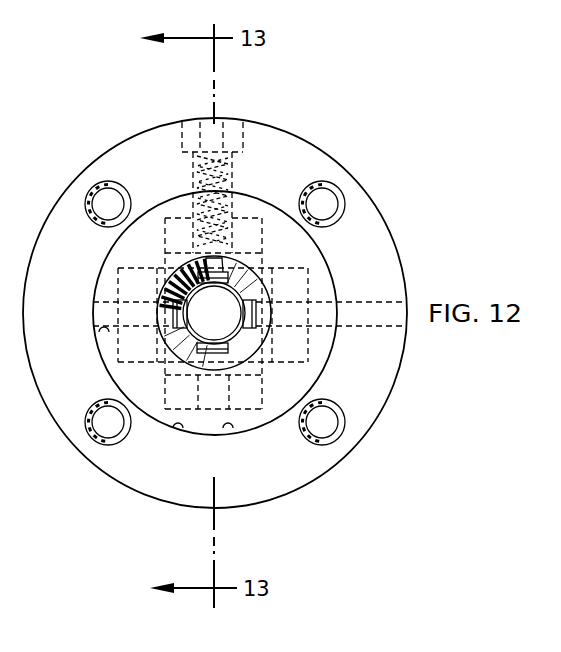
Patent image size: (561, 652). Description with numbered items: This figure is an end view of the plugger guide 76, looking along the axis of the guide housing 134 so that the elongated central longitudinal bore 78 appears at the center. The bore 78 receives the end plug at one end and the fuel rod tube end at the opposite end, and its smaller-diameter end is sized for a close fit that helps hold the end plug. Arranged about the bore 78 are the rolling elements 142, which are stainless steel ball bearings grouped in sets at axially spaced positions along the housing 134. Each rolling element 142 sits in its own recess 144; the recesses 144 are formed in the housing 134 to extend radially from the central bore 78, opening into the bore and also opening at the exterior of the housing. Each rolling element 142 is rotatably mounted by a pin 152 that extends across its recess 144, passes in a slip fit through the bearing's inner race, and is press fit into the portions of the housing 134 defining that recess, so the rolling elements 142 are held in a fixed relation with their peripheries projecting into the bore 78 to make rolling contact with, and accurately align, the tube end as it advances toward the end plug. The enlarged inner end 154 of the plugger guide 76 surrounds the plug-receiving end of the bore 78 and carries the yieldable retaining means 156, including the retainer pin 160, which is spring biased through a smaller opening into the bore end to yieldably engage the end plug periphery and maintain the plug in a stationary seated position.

The plugger guide 76 is at (390, 144).
The enlarged inner end 154 is at (342, 167).
The guide housing 134 is at (338, 276).
The pin 152 is at (247, 216).
The rolling elements 142 is at (88, 317).
The recesses 144 is at (98, 339).
The yieldable retaining means 156 is at (244, 163).
The central longitudinal bore 78 is at (186, 342).
The retainer pin 160 is at (226, 292).